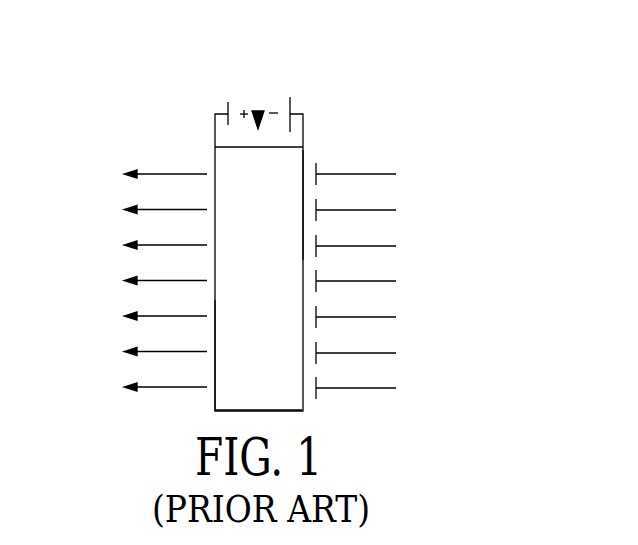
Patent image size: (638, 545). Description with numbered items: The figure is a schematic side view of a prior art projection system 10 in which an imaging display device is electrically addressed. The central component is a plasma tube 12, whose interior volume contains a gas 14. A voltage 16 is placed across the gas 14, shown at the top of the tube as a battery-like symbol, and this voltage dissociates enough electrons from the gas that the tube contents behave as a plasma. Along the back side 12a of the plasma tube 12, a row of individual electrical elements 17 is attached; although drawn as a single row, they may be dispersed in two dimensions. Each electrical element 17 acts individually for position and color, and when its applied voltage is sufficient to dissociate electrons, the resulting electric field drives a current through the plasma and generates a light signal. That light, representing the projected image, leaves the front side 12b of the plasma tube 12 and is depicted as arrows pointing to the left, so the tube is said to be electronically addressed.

The projection system 10 is at (77, 281).
The plasma tube 12 is at (215, 158).
The back side 12a is at (305, 192).
The front side 12b is at (215, 366).
The gas 14 is at (288, 175).
The voltage 16 is at (259, 105).
The electrical elements 17 is at (372, 210).